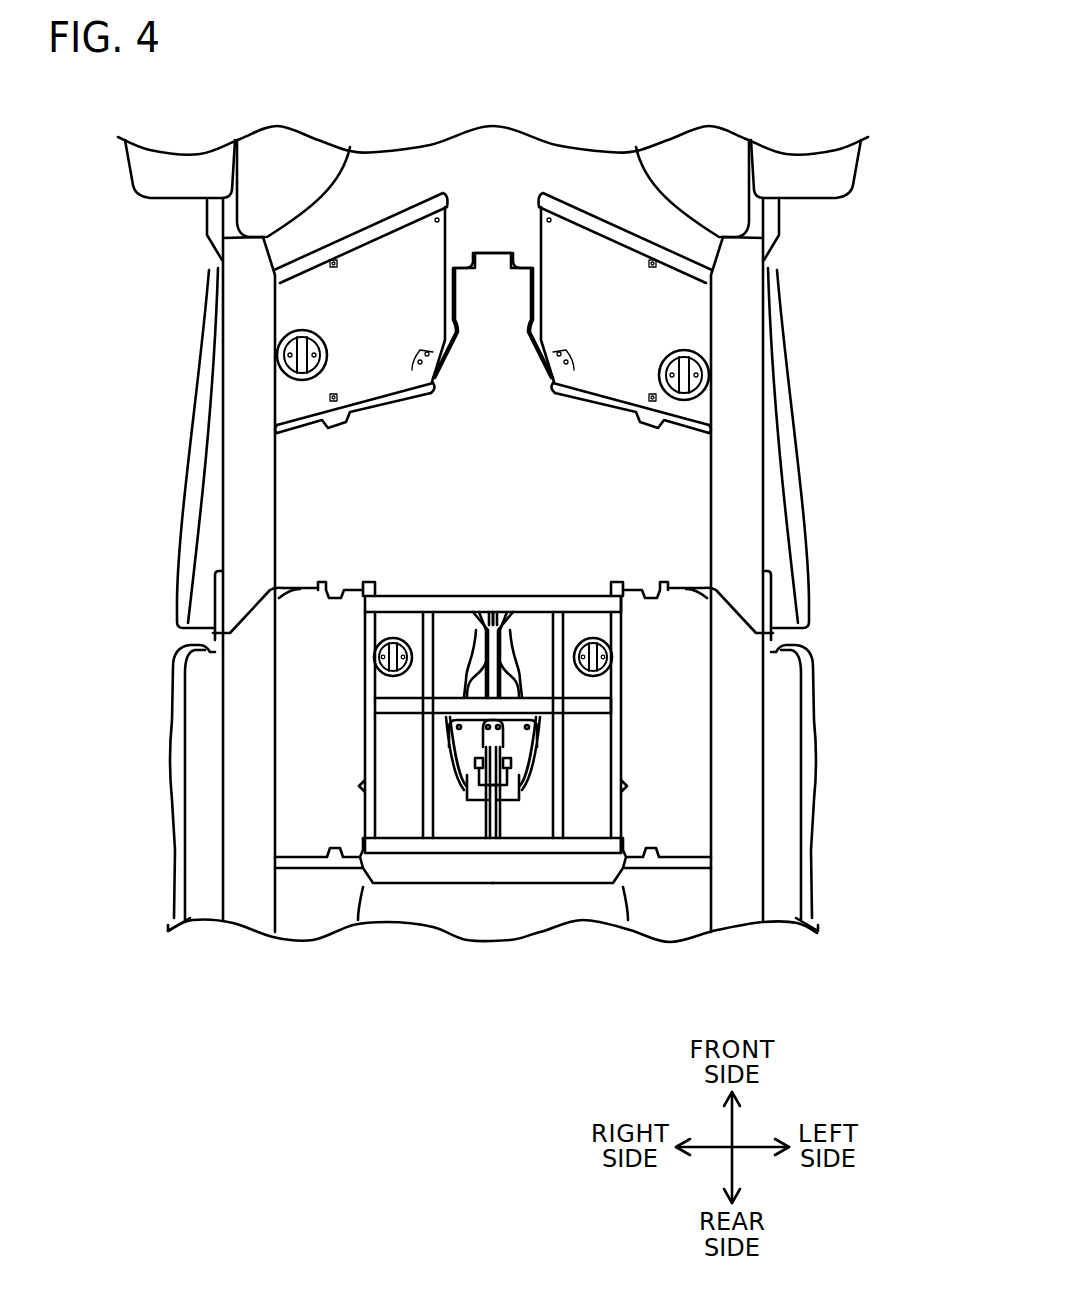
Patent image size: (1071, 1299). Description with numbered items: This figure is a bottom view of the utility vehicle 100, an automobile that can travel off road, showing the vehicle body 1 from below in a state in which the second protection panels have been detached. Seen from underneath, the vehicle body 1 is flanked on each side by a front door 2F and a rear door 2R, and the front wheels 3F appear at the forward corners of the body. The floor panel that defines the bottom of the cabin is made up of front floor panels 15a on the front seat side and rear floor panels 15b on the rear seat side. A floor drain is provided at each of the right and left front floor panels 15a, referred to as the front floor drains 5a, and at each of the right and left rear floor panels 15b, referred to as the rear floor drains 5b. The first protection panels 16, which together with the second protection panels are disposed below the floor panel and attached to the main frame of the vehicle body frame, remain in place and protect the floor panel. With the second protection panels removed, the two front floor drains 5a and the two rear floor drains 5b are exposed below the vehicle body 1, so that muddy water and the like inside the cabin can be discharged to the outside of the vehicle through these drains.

The utility vehicle 100 is at (268, 61).
The vehicle body 1 is at (169, 563).
The front doors 2F is at (183, 503).
The rear doors 2R is at (172, 787).
The front wheels 3F is at (150, 200).
The front floor drain 5a is at (280, 373).
The rear floor drain 5b is at (384, 676).
The front floor panel 15a is at (307, 314).
The rear floor panel 15b is at (397, 757).
The first protection panels 16 is at (378, 163).